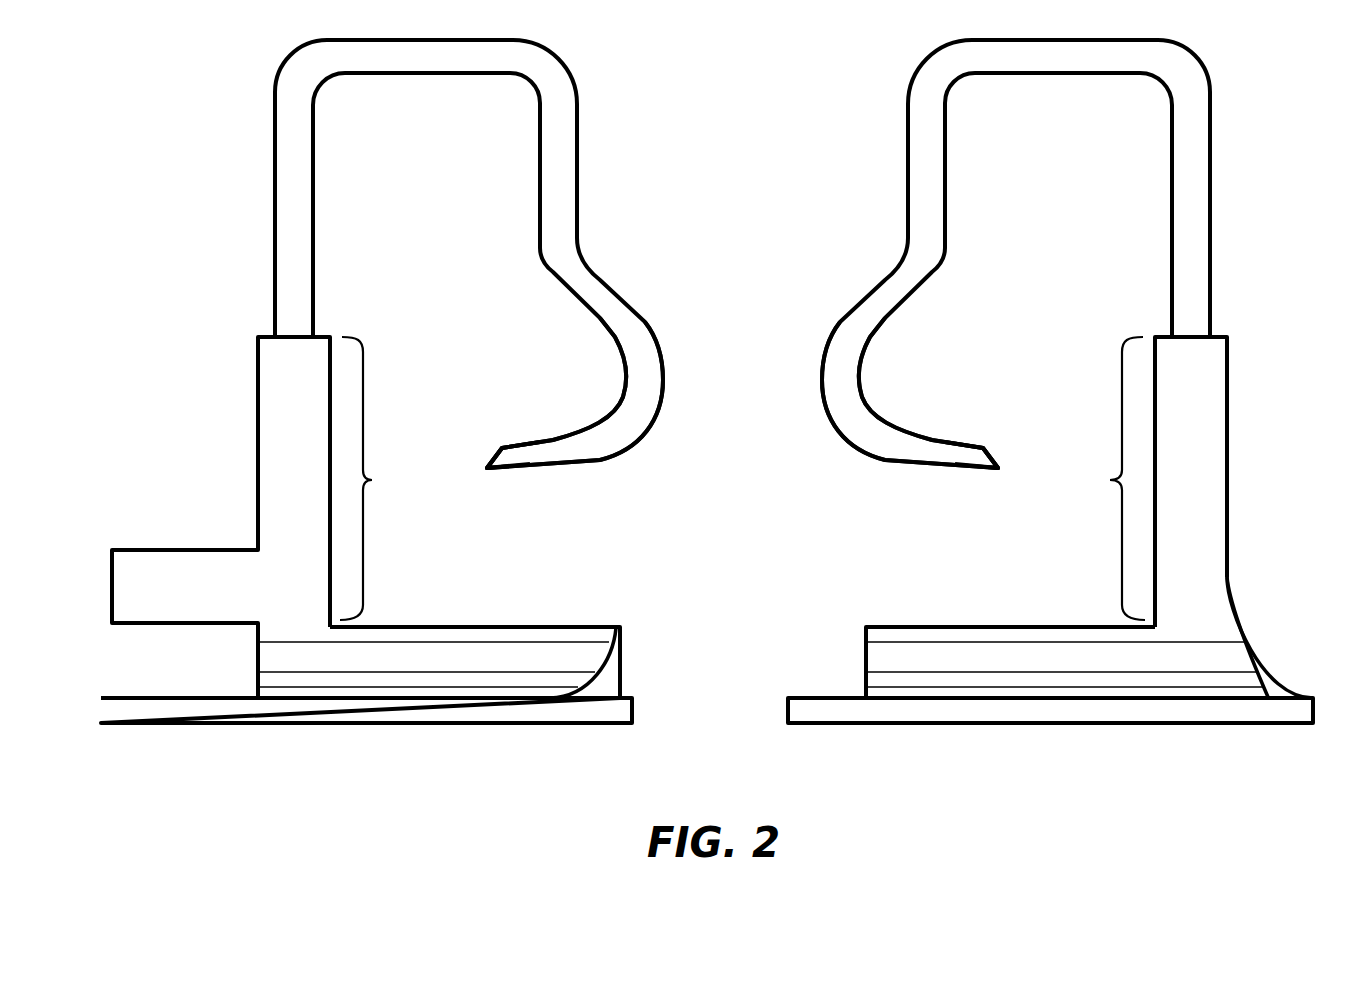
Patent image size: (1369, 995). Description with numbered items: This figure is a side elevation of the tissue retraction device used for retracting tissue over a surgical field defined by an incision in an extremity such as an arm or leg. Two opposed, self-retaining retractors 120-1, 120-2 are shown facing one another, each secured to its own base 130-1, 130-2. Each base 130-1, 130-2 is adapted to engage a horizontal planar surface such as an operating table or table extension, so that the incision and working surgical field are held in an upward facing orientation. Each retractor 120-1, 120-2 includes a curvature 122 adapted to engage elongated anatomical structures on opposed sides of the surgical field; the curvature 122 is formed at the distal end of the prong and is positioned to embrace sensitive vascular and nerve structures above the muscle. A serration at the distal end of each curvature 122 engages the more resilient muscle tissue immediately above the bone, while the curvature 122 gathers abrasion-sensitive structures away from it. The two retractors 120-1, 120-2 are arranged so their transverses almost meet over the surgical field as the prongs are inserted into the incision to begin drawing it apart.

The retractor 120-1 is at (208, 192).
The retractor 120-2 is at (1277, 192).
The curvature 122 is at (822, 375).
The base 130-1 is at (474, 722).
The base 130-2 is at (945, 722).